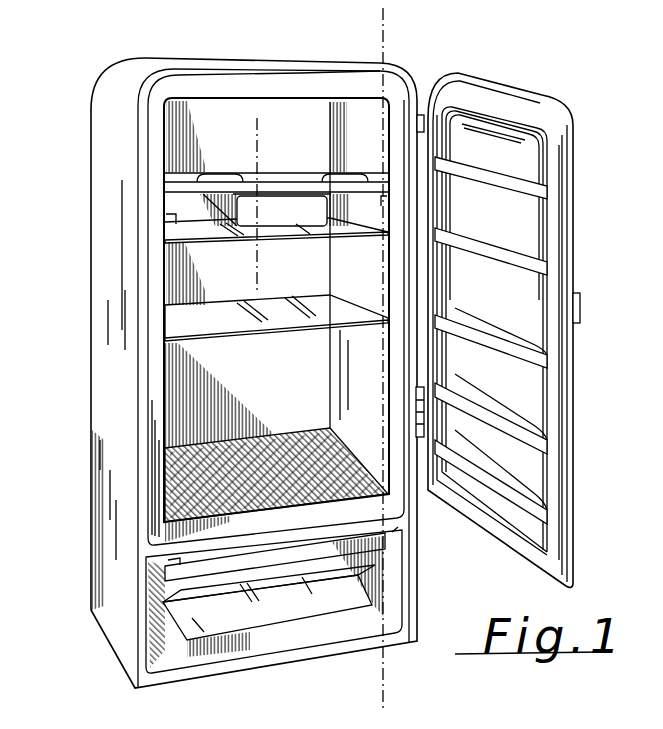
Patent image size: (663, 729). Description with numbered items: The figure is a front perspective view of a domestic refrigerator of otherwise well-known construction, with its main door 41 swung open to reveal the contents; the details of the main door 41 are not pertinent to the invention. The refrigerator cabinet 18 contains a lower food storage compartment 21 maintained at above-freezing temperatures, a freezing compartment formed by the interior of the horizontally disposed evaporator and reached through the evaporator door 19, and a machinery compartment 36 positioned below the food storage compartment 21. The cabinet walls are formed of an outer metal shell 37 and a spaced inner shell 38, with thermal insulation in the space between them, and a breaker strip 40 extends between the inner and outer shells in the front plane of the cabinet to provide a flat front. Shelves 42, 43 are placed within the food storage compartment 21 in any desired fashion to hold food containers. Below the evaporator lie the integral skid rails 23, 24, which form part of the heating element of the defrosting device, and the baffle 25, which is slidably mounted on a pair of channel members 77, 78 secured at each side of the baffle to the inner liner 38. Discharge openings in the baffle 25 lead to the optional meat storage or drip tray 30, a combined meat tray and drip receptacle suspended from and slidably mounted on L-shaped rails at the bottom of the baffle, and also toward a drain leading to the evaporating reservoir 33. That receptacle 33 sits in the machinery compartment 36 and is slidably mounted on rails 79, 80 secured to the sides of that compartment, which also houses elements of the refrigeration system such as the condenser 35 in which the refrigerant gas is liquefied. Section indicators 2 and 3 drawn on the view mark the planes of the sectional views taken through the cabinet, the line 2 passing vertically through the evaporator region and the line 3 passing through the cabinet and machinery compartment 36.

The section line 2- 2 is at (267, 137).
The section line 3- 3 is at (408, 28).
The refrigerator cabinet 18 is at (90, 317).
The evaporator door 19 is at (312, 131).
The food storage compartment 21 is at (176, 212).
The skid rail 23 is at (250, 179).
The skid rail 24 is at (352, 180).
The baffle 25 is at (270, 187).
The meat storage or drip tray 30 is at (308, 219).
The evaporating reservoir 33 is at (310, 557).
The condenser 35 is at (285, 613).
The machinery compartment 36 is at (164, 592).
The outer metal shell 37 is at (108, 482).
The inner shell 38 is at (326, 473).
The breaker strip 40 is at (146, 387).
The main door 41 is at (575, 119).
The shelf 42 is at (224, 241).
The shelf 43 is at (225, 328).
The channel member 77 is at (168, 222).
The channel member 78 is at (382, 198).
The rail 79 is at (173, 562).
The rail 80 is at (392, 531).